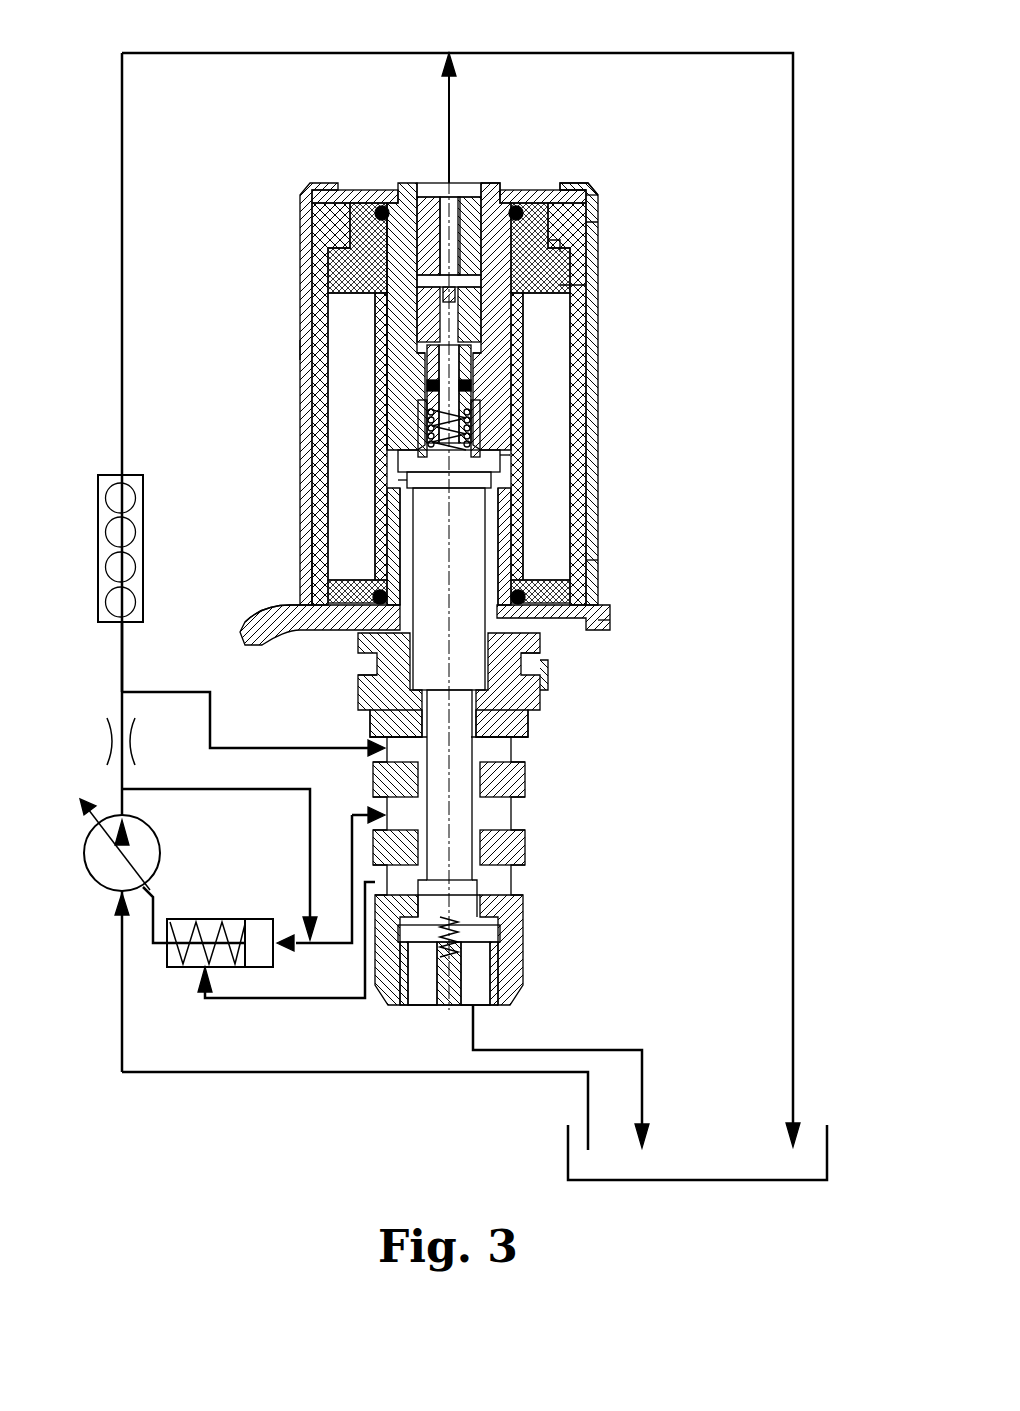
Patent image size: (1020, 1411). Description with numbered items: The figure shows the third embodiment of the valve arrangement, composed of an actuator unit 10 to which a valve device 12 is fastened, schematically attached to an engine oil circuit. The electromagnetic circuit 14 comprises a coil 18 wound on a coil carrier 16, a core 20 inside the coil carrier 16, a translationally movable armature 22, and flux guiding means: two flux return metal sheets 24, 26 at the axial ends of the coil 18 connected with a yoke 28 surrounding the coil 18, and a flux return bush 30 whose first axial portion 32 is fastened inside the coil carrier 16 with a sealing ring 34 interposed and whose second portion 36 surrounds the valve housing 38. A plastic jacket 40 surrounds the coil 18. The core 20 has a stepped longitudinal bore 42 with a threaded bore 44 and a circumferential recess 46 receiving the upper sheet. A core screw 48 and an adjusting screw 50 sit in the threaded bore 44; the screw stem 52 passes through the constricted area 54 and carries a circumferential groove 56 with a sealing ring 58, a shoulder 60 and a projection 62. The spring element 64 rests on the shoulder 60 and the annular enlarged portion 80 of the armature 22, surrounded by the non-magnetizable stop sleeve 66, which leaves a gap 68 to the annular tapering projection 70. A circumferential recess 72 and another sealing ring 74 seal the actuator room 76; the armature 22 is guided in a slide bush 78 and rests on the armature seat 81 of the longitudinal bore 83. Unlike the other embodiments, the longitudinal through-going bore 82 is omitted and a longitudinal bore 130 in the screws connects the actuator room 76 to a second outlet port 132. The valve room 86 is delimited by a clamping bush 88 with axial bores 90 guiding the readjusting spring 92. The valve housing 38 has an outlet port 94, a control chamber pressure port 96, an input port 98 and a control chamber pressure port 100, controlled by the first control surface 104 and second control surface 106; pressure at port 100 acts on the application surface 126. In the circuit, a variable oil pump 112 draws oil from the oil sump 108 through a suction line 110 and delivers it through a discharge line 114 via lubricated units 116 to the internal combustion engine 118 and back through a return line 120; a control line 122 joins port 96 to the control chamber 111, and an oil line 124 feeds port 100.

The actuator unit 10 is at (690, 365).
The valve device 12 is at (608, 878).
The electromagnetic circuit 14 is at (552, 330).
The coil carrier 16 is at (545, 432).
The coil 18 is at (562, 542).
The core 20 is at (598, 200).
The armature 22 is at (600, 612).
The upper flux return metal sheet 24 is at (548, 192).
The lower flux return metal sheet 26 is at (605, 632).
The yoke 28 is at (318, 240).
The flux return bush 30 is at (312, 550).
The first axial portion 32 is at (312, 582).
The sealing ring 34 is at (300, 600).
The second portion 36 is at (362, 645).
The valve housing 38 is at (370, 724).
The plastic jacket 40 is at (300, 352).
The longitudinal bore 42 is at (555, 245).
The threaded bore 44 is at (388, 190).
The circumferential recess 46 is at (516, 190).
The core screw 48 is at (433, 185).
The adjusting screw 50 is at (472, 380).
The screw stem 52 is at (395, 335).
The constricted area 54 is at (426, 405).
The circumferential groove 56 is at (430, 428).
The sealing ring 58 is at (472, 386).
The shoulder 60 is at (420, 448).
The projection 62 is at (500, 460).
The spring element 64 is at (510, 466).
The stop sleeve 66 is at (512, 520).
The gap 68 is at (492, 478).
The annular tapering projection 70 is at (407, 480).
The circumferential recess 72 is at (325, 197).
The sealing ring 74 is at (518, 208).
The actuator room 76 is at (590, 570).
The slide bush 78 is at (525, 600).
The annular enlarged portion 80 is at (413, 520).
The armature seat 81 is at (378, 688).
The longitudinal through-going bore 82 is at (522, 652).
The longitudinal bore 83 is at (385, 826).
The valve room 86 is at (500, 930).
The clamping bush 88 is at (505, 990).
The axial bores 90 is at (488, 1005).
The readjusting spring 92 is at (468, 946).
The outlet port 94 is at (420, 1005).
The control chamber pressure port 96 is at (507, 845).
The input port 98 is at (507, 780).
The control chamber pressure port 100 is at (528, 724).
The first control surface 104 is at (472, 893).
The second control surface 106 is at (472, 748).
The oil sump 108 is at (650, 1092).
The suction line 110 is at (218, 1070).
The control chamber 111 is at (212, 920).
The variable oil pump 112 is at (158, 850).
The discharge line 114 is at (124, 648).
The units to be lubricated 116 is at (107, 742).
The internal combustion engine 118 is at (140, 510).
The return line 120 is at (124, 318).
The control line 122 is at (322, 1000).
The oil line 124 is at (196, 692).
The application surface 126 is at (548, 674).
The longitudinal bore 130 is at (598, 222).
The second outlet port 132 is at (455, 183).